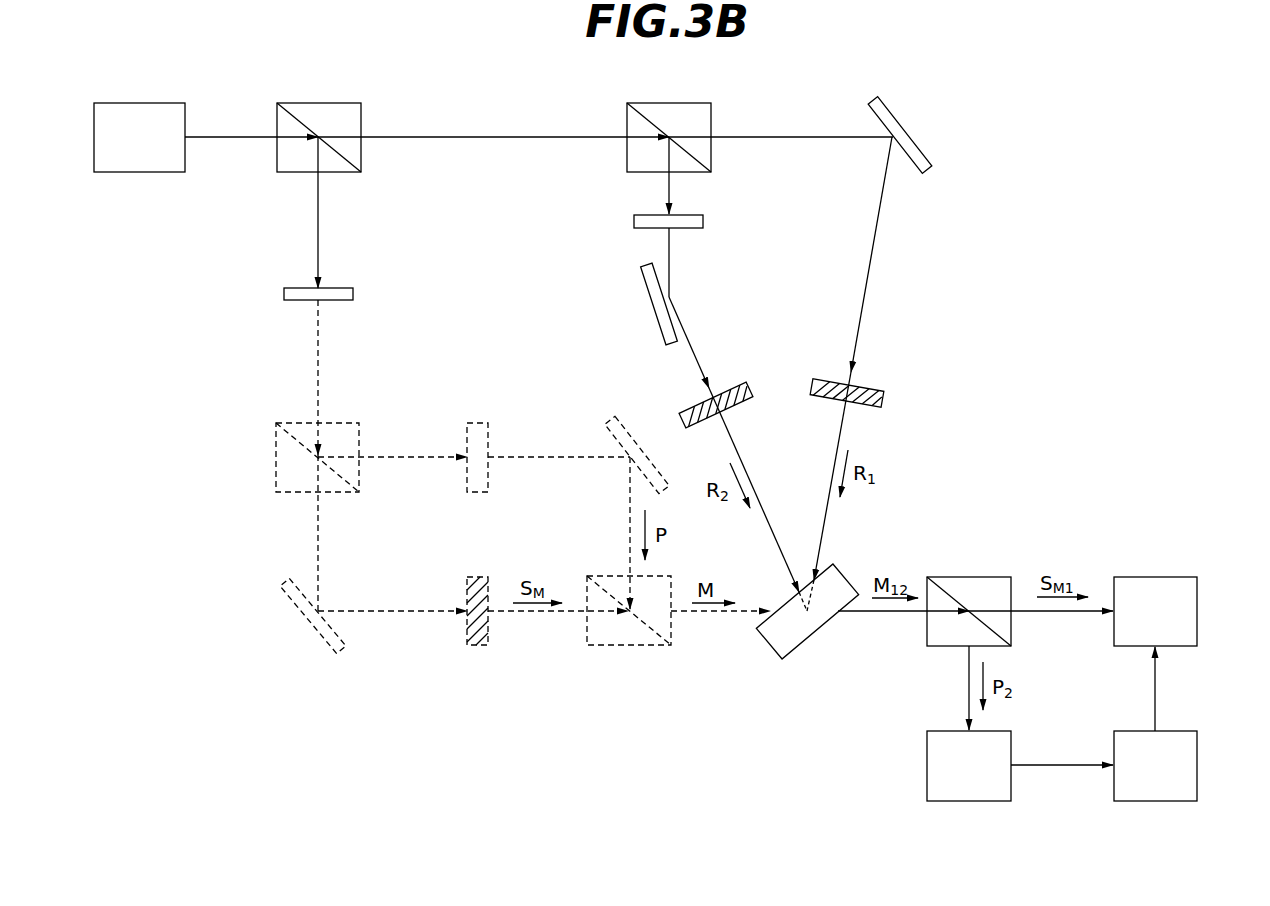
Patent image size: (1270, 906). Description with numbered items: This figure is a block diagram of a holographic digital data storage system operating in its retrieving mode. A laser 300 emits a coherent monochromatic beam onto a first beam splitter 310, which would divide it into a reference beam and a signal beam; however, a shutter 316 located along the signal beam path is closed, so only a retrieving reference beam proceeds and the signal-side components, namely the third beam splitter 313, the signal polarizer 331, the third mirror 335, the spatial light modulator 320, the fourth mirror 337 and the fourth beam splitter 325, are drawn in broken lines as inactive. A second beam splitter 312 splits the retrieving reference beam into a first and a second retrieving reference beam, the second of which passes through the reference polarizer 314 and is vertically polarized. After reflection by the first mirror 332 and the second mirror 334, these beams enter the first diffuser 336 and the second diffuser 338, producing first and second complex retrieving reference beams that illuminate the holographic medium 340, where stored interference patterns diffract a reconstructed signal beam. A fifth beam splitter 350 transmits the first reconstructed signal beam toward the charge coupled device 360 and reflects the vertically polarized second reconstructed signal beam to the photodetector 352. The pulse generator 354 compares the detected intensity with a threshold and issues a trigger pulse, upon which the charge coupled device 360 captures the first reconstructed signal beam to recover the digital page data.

The laser 300 is at (185, 103).
The first beam splitter 310 is at (361, 103).
The second beam splitter 312 is at (711, 103).
The third beam splitter 313 is at (359, 423).
The reference polarizer 314 is at (634, 222).
The shutter 316 is at (284, 294).
The spatial light modulator 320 is at (478, 645).
The fourth beam splitter 325 is at (630, 645).
The signal polarizer 331 is at (478, 423).
The first mirror 332 is at (918, 130).
The second mirror 334 is at (650, 305).
The third mirror 335 is at (342, 645).
The first diffuser 336 is at (883, 398).
The fourth mirror 337 is at (608, 422).
The second diffuser 338 is at (746, 388).
The holographic medium 340 is at (815, 638).
The fifth beam splitter 350 is at (1011, 577).
The photodetector 352 is at (927, 765).
The pulse generator 354 is at (1197, 765).
The charge coupled device 360 is at (1197, 577).